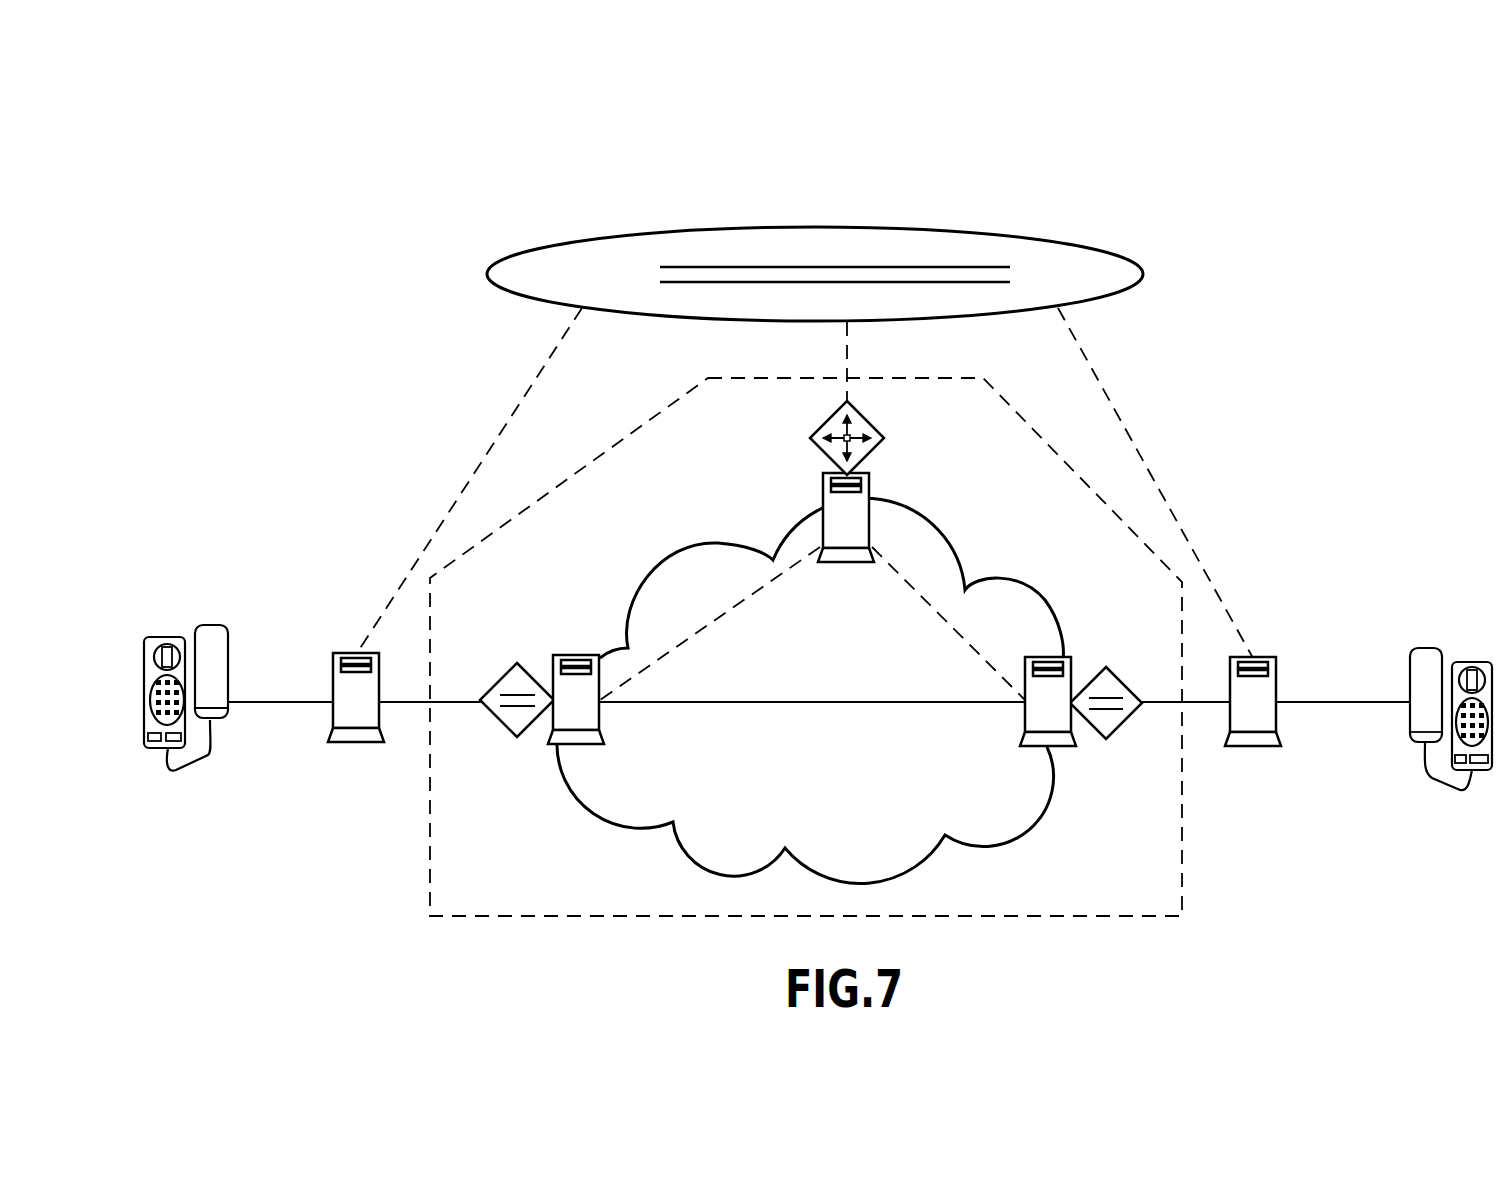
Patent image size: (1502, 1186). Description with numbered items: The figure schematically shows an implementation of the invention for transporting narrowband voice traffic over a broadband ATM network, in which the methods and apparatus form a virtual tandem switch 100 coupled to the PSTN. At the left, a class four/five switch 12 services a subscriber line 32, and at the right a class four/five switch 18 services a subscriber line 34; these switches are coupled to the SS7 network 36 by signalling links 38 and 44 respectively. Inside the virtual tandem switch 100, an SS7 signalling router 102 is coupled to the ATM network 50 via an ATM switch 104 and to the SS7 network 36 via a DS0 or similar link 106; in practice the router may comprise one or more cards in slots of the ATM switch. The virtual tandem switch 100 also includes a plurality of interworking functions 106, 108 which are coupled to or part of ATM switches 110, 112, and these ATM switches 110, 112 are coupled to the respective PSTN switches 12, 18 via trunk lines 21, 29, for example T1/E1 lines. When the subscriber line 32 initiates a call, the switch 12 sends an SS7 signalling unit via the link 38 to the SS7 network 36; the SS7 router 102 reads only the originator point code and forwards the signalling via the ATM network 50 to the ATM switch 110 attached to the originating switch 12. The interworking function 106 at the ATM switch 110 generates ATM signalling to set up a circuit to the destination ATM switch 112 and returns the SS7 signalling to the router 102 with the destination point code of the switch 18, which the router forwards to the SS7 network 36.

The class 4/5 switch 12 is at (358, 743).
The class 4/5 switch 18 is at (1252, 748).
The trunk line 21 is at (403, 698).
The trunk line 29 is at (1208, 702).
The subscriber line 32 is at (228, 676).
The subscriber line 34 is at (1410, 718).
The SS7 network 36 is at (902, 228).
The signalling link 38 is at (515, 408).
The signalling link 44 is at (1108, 397).
The ATM network 50 is at (1025, 828).
The virtual tandem switch 100 is at (1182, 860).
The SS7 signalling router 102 is at (862, 420).
The ATM switch 104 is at (873, 487).
The link / interworking function 106 is at (848, 358).
The interworking function 108 is at (1123, 680).
The ATM switch 110 is at (578, 655).
The ATM switch 112 is at (1062, 748).